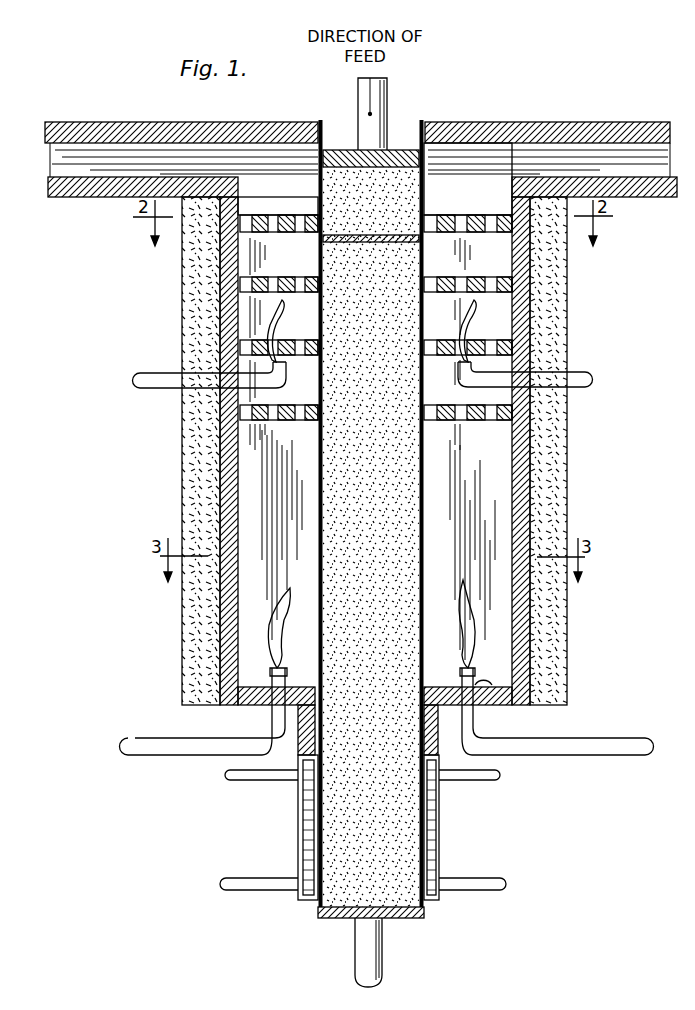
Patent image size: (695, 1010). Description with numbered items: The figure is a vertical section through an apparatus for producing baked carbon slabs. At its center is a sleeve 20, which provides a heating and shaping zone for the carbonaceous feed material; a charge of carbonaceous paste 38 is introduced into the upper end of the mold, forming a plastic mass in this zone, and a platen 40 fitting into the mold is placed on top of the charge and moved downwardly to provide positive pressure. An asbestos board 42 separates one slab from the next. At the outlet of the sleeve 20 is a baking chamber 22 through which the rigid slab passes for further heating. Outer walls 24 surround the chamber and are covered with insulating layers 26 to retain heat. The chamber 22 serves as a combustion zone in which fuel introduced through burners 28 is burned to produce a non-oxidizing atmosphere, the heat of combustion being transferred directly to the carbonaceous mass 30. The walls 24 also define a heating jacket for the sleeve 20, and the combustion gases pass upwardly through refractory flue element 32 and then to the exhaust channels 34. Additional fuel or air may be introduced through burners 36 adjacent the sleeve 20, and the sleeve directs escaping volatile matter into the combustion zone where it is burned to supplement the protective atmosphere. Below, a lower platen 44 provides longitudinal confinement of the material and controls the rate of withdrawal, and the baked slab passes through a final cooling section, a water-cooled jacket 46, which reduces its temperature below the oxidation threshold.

The sleeve 20 is at (435, 193).
The baking chamber 22 is at (300, 478).
The outer walls 24 is at (235, 260).
The insulating layers 26 is at (182, 312).
The burners 28 is at (287, 672).
The carbonaceous mass 30 is at (400, 528).
The refractory flue element 32 is at (480, 238).
The exhaust channels 34 is at (117, 160).
The burners 36 is at (168, 388).
The carbonaceous paste 38 is at (345, 188).
The platen 40 is at (397, 150).
The asbestos board 42 is at (340, 240).
The lower platen 44 is at (345, 920).
The water-cooled jacket 46 is at (439, 830).